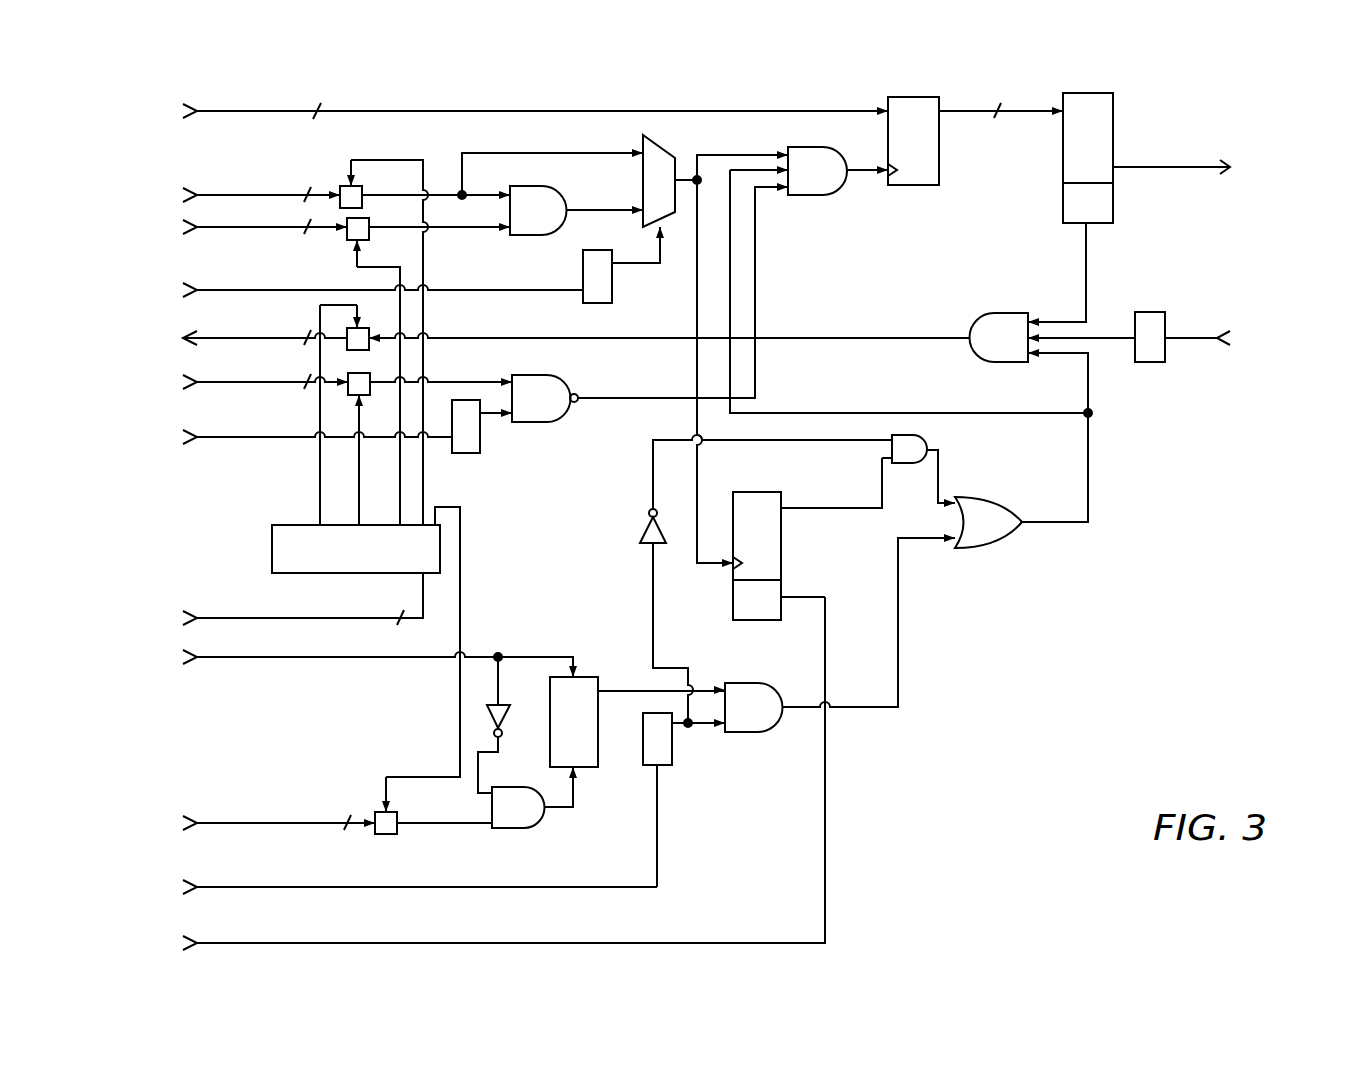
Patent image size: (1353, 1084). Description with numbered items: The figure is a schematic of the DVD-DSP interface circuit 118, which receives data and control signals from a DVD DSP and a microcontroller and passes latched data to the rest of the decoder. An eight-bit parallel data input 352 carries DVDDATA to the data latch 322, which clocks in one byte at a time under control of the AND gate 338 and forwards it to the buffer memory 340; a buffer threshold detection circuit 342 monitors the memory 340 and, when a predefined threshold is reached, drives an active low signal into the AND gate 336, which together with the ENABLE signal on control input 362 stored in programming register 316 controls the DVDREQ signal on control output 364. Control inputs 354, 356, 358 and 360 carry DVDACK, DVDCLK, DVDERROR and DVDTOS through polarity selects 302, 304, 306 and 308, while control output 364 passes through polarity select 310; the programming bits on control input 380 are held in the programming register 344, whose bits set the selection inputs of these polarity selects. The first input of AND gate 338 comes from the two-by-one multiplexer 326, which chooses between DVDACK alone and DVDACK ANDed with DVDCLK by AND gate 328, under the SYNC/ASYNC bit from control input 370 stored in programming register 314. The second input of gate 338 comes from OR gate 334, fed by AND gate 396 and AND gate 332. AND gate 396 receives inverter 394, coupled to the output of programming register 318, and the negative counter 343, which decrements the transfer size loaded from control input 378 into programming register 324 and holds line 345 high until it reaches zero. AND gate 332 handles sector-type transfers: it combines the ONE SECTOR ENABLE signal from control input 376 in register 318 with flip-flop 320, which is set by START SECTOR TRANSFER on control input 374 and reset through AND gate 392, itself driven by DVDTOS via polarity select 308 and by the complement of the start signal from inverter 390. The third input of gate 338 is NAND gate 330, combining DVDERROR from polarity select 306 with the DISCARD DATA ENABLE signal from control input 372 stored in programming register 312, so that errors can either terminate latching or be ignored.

The DVD-DSP interface circuit 118 is at (1012, 645).
The polarity select 302 is at (362, 188).
The polarity select 304 is at (368, 236).
The polarity select 306 is at (348, 395).
The polarity select 308 is at (397, 832).
The polarity select 310 is at (368, 330).
The programming register 312 is at (466, 453).
The programming register 314 is at (612, 288).
The programming register 316 is at (1150, 362).
The programming register 318 is at (672, 755).
The flip-flop 320 is at (585, 767).
The data latch 322 is at (912, 185).
The programming register 324 is at (757, 620).
The 2x1 multiplexer 326 is at (645, 140).
The AND gate 328 is at (550, 186).
The NAND gate 330 is at (537, 422).
The AND gate 332 is at (750, 732).
The OR gate 334 is at (993, 548).
The AND gate 336 is at (1005, 312).
The AND gate 338 is at (820, 195).
The buffer memory 340 is at (1060, 157).
The buffer threshold detection circuit 342 is at (1060, 212).
The negative counter 343 is at (752, 492).
The programming register 344 is at (272, 540).
The line 345 is at (812, 508).
The data input 352 is at (217, 113).
The control input 354 is at (202, 193).
The control input 356 is at (207, 229).
The control input 358 is at (207, 384).
The control input 360 is at (200, 822).
The control input 362 is at (1197, 340).
The control output 364 is at (205, 336).
The control input 370 is at (203, 289).
The control input 372 is at (207, 436).
The control input 374 is at (217, 657).
The control input 376 is at (200, 886).
The control input 378 is at (200, 942).
The control input 380 is at (203, 617).
The inverter 390 is at (503, 705).
The AND gate 392 is at (510, 828).
The inverter 394 is at (648, 528).
The AND gate 396 is at (903, 435).